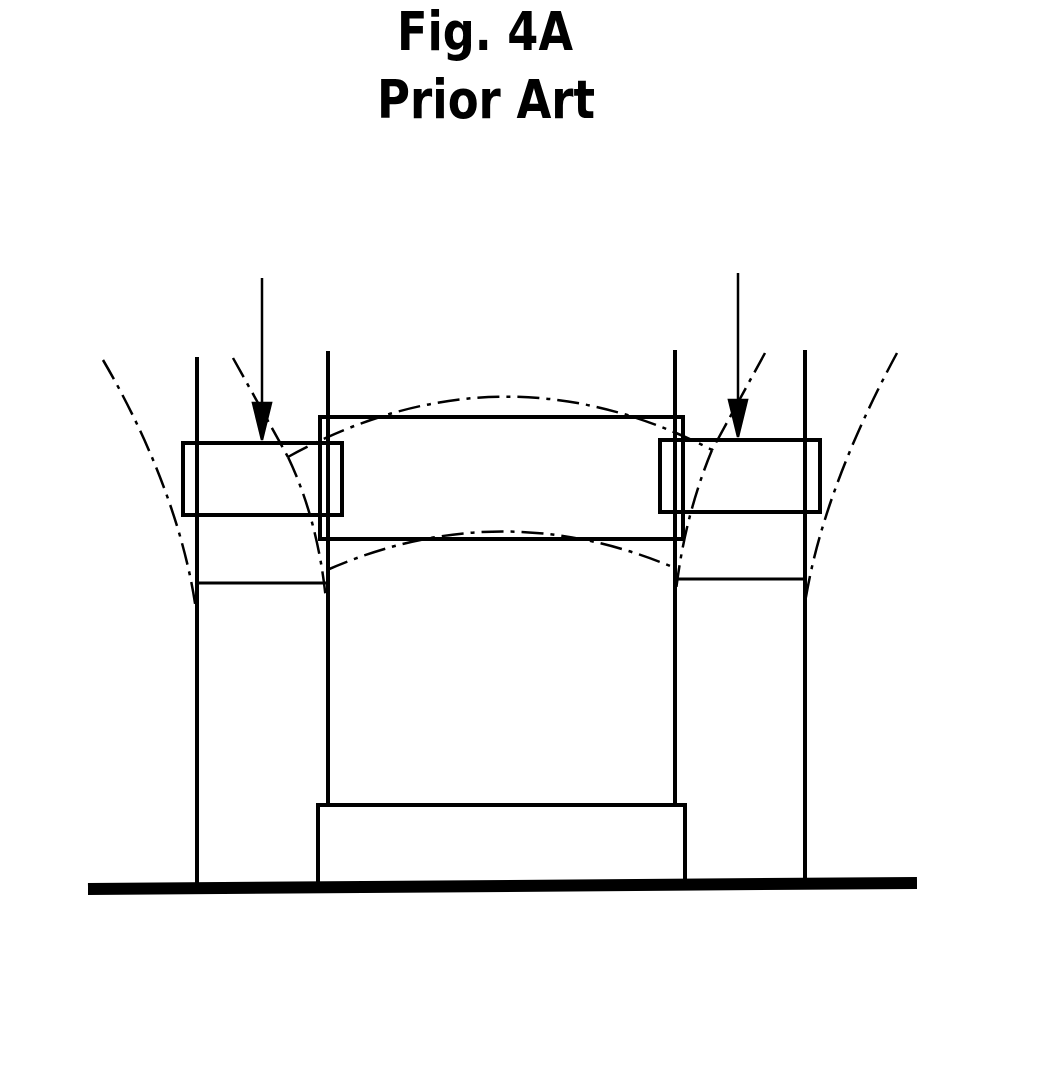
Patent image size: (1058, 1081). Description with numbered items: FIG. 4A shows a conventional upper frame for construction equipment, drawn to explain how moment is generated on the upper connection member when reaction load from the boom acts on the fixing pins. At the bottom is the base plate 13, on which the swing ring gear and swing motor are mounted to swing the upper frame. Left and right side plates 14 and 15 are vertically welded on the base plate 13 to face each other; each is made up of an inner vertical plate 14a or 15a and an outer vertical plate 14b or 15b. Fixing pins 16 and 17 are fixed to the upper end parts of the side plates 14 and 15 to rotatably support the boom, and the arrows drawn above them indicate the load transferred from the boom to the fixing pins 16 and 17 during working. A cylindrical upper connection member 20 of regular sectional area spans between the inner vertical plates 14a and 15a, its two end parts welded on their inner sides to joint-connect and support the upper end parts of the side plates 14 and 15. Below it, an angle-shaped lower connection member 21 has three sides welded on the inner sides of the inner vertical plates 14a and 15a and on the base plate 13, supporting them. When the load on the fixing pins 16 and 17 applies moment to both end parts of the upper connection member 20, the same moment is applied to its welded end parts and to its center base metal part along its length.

The base plate 13 is at (122, 895).
The left side plate 14 is at (319, 712).
The inner vertical plate 14a is at (330, 757).
The outer vertical plate 14b is at (198, 820).
The right side plate 15 is at (797, 710).
The inner vertical plate 15a is at (676, 757).
The outer vertical plate 15b is at (807, 760).
The fixing pin 16 is at (227, 443).
The fixing pin 17 is at (773, 438).
The upper connection member 20 is at (468, 442).
The lower connection member 21 is at (575, 855).